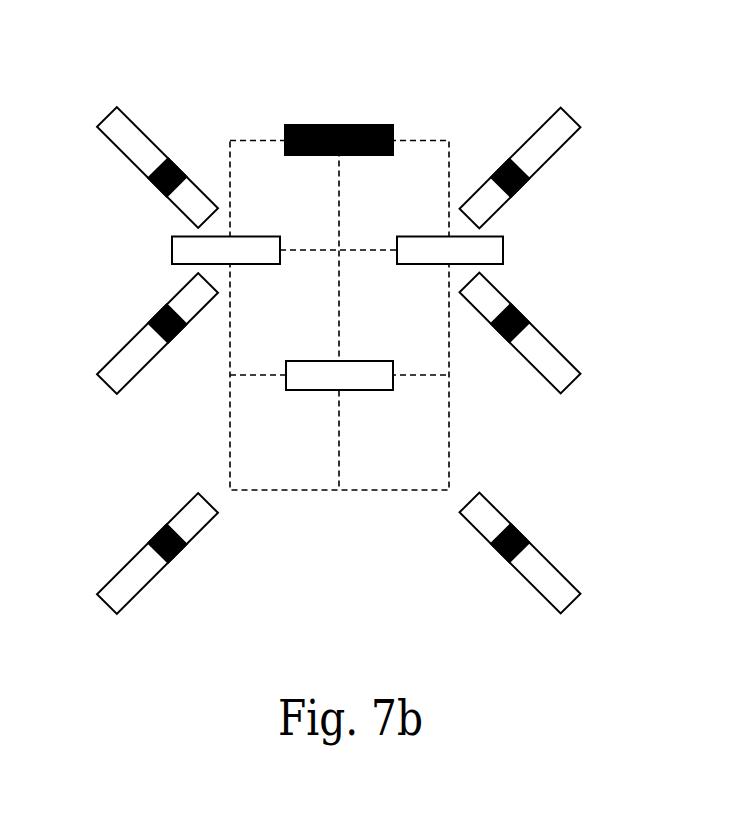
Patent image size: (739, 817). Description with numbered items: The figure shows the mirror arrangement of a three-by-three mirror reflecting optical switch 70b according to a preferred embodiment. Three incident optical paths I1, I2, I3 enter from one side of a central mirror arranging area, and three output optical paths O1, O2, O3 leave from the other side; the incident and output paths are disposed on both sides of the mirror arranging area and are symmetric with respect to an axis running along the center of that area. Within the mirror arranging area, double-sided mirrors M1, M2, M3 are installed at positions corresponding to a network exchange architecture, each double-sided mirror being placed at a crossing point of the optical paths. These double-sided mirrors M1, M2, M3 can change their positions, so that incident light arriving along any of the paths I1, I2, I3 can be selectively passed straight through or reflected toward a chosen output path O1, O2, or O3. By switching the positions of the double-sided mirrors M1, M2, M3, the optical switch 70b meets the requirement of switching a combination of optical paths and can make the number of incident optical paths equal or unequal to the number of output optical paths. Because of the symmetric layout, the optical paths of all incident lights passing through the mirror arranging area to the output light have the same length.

The mirror reflecting optical switch 70b is at (508, 79).
The incident optical path I1 is at (108, 112).
The incident optical path I2 is at (100, 383).
The incident optical path I3 is at (105, 607).
The output optical path O1 is at (577, 126).
The output optical path O2 is at (573, 383).
The output optical path O3 is at (570, 603).
The double-sided mirror M1 is at (172, 252).
The double-sided mirror M2 is at (320, 391).
The double-sided mirror M3 is at (503, 245).